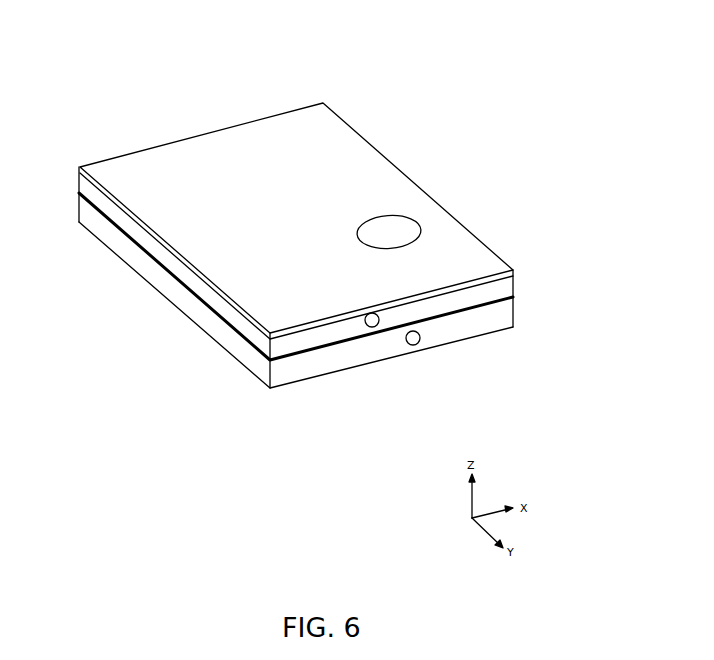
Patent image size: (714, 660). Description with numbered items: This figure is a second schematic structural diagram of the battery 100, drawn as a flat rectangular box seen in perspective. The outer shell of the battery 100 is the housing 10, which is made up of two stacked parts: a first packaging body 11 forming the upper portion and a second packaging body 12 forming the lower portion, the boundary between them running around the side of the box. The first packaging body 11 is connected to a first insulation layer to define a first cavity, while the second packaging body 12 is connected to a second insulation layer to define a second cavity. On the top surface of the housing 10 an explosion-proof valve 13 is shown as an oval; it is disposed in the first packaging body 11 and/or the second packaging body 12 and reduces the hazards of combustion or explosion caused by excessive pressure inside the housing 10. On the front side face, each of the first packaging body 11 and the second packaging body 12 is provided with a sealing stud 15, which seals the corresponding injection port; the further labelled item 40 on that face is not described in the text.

The battery 100 is at (328, 48).
The housing 10 is at (321, 246).
The first packaging body 11 is at (309, 231).
The second packaging body 12 is at (309, 291).
The explosion-proof valve 13 is at (400, 228).
The sealing stud 15 is at (376, 327).
The connector / port 40 is at (370, 327).